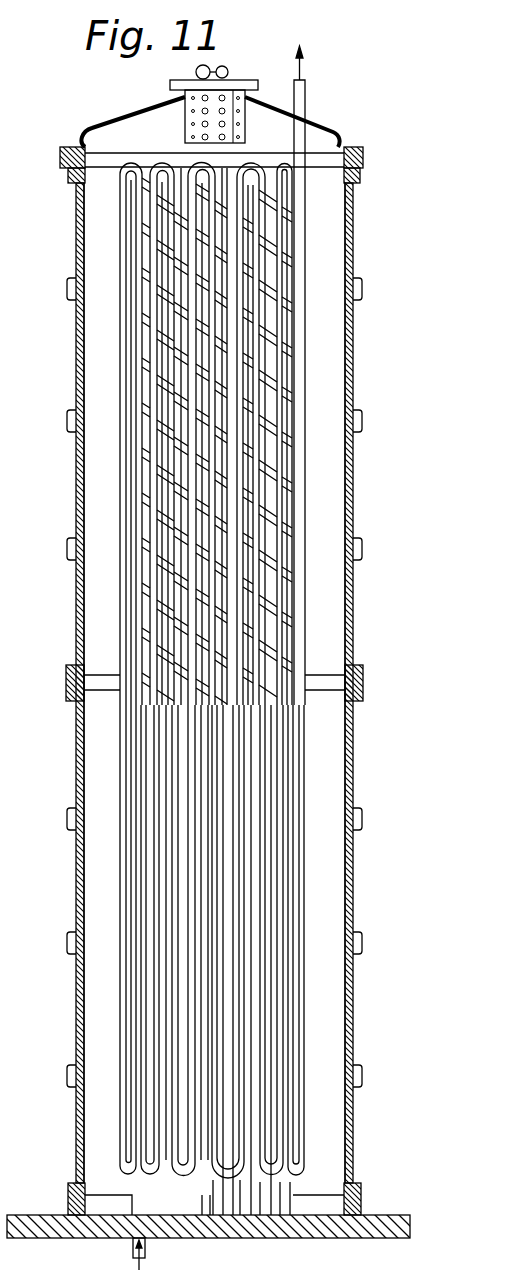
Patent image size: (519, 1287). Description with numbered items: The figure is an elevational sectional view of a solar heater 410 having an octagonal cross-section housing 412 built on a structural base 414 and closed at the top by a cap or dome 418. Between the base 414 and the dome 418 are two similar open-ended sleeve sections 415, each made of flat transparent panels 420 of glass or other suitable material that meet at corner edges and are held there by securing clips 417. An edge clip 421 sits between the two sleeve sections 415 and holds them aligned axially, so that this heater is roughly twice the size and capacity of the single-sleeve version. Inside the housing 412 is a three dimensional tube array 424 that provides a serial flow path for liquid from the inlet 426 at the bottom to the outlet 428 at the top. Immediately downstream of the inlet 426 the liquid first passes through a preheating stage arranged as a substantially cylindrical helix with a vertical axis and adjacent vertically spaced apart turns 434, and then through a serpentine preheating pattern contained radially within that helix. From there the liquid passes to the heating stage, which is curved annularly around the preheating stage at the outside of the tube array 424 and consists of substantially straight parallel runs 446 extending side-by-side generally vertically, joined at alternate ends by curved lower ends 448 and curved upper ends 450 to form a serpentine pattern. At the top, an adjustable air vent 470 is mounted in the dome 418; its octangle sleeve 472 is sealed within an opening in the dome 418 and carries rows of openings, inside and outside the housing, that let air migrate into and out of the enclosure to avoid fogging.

The solar heater 410 is at (209, 681).
The housing 412 is at (75, 520).
The structural base 414 is at (385, 1212).
The sleeve sections 415 is at (330, 588).
The securing clips 417 is at (362, 428).
The cap or dome 418 is at (112, 124).
The flat transparent panels 420 is at (353, 375).
The edge clip 421 is at (74, 683).
The three dimensional tube array 424 is at (108, 576).
The inlet 426 is at (146, 1250).
The outlet 428 is at (306, 108).
The turns 434 is at (170, 513).
The runs 446 is at (262, 1022).
The curved lower ends 448 is at (215, 1178).
The curved upper ends 450 is at (160, 167).
The adjustable air vent 470 is at (252, 70).
The octangle sleeve 472 is at (185, 103).